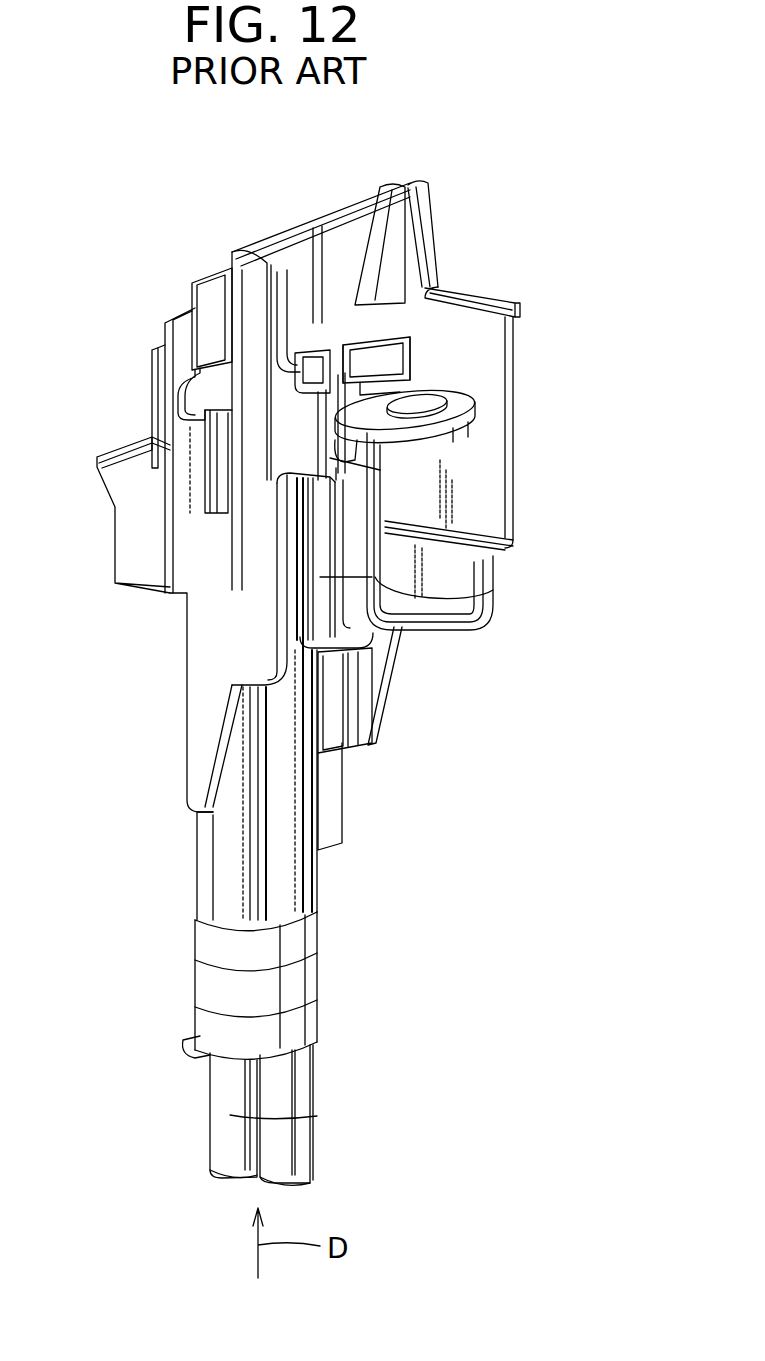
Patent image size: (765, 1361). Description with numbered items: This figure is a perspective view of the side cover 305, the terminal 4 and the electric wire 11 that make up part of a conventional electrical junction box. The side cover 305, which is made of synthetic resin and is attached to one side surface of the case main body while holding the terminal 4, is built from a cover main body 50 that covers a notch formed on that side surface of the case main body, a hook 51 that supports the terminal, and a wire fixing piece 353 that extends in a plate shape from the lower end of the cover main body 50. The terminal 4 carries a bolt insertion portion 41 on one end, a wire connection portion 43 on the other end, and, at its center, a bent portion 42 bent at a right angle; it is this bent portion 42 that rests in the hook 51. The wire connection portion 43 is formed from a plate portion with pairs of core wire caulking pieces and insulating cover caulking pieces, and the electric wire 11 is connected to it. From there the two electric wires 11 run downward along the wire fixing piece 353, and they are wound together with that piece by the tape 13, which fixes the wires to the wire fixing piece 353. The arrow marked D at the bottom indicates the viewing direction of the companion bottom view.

The terminal 4 is at (490, 396).
The electric wire 11 is at (323, 1112).
The tape 13 is at (303, 985).
The bolt insertion portion 41 is at (418, 398).
The bent portion 42 is at (373, 377).
The wire connection portion 43 is at (495, 592).
The cover main body 50 is at (300, 243).
The hook 51 is at (382, 190).
The side cover 305 is at (450, 214).
The wire fixing piece 353 is at (200, 850).